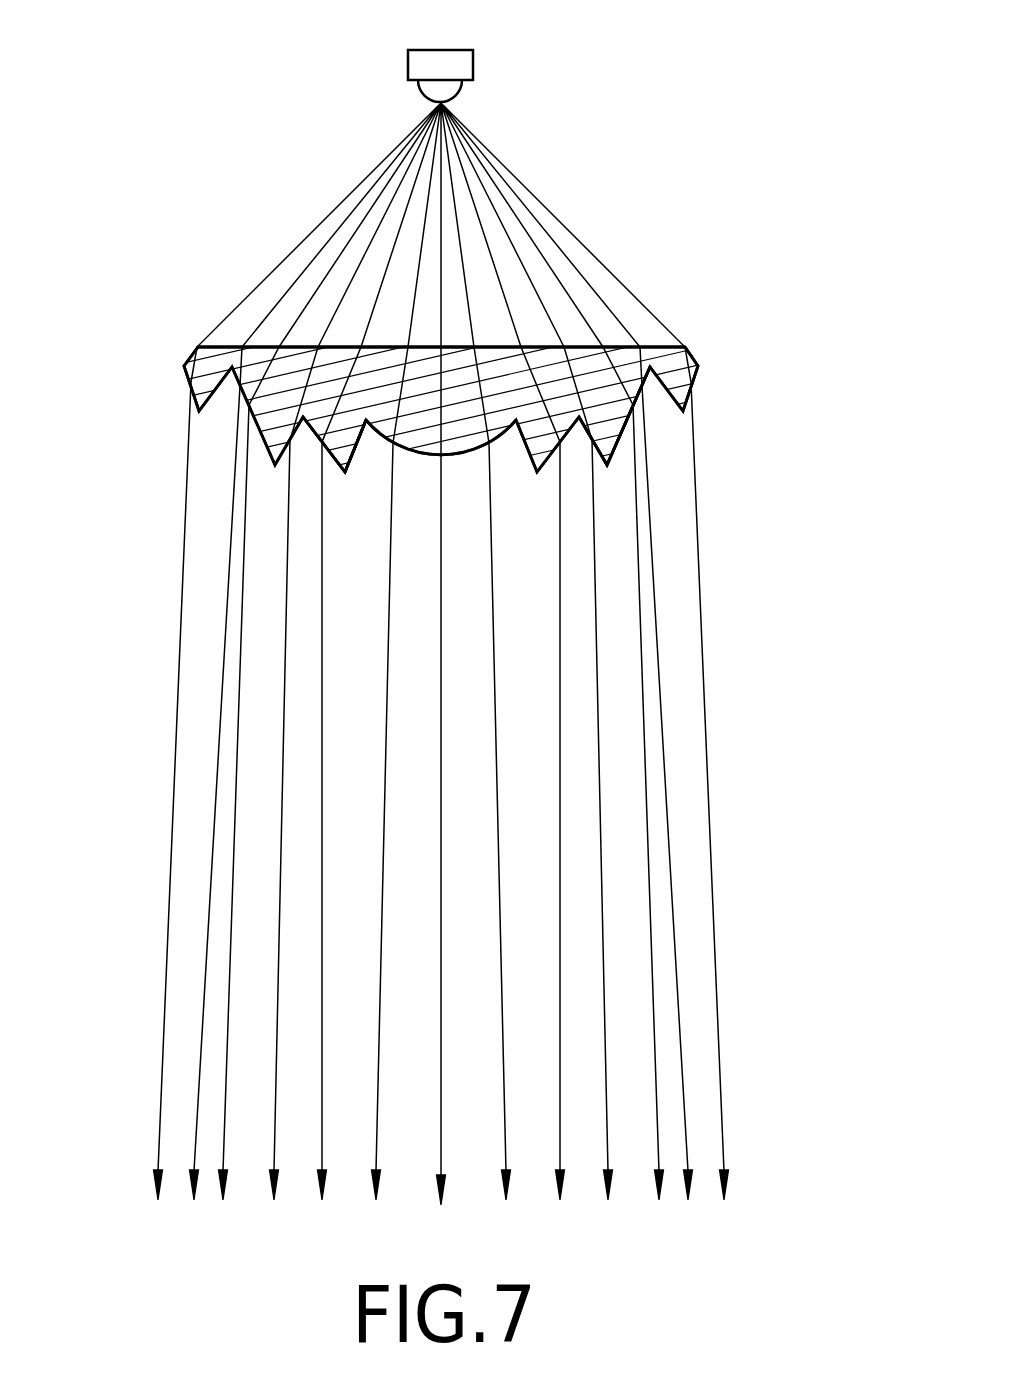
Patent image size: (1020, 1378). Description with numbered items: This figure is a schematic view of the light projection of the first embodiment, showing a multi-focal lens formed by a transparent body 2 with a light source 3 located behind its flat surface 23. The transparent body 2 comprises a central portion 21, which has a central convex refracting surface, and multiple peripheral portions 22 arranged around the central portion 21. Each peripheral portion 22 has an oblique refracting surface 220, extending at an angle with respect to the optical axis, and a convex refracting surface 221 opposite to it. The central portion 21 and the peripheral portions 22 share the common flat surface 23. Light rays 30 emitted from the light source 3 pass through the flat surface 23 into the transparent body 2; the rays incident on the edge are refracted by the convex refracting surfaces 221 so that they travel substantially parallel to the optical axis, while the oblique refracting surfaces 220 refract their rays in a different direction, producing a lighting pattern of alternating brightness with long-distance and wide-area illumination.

The light source 3 is at (438, 90).
The light rays 30 is at (515, 160).
The transparent body 2 is at (708, 373).
The flat surface 23 is at (538, 347).
The central portion 21 is at (468, 452).
The peripheral portions 22 is at (337, 437).
The convex refracting surface 221 is at (357, 440).
The oblique refracting surface 220 is at (358, 447).